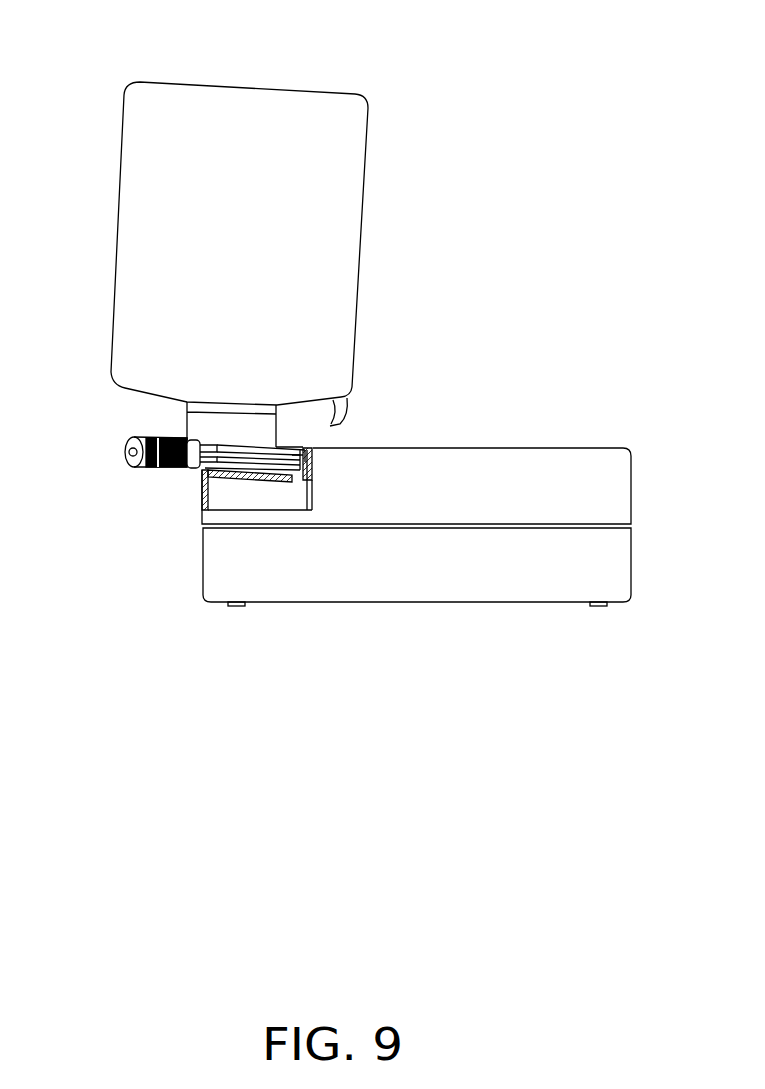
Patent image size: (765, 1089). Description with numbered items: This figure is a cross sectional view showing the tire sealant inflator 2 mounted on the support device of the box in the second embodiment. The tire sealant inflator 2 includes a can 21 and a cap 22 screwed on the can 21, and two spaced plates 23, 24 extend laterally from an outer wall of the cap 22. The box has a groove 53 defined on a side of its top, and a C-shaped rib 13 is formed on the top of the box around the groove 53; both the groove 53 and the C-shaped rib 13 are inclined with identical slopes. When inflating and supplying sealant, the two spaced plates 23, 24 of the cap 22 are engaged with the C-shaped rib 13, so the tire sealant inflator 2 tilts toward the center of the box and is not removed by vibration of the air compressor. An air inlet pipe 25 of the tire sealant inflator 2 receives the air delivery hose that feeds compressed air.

The tire sealant inflator 2 is at (267, 244).
The can 21 is at (362, 224).
The cap 22 is at (200, 425).
The spaced plate 23 is at (285, 452).
The C-shaped rib 13 is at (291, 460).
The spaced plate 24 is at (313, 483).
The air inlet pipe 25 is at (125, 449).
The groove 53 is at (252, 477).